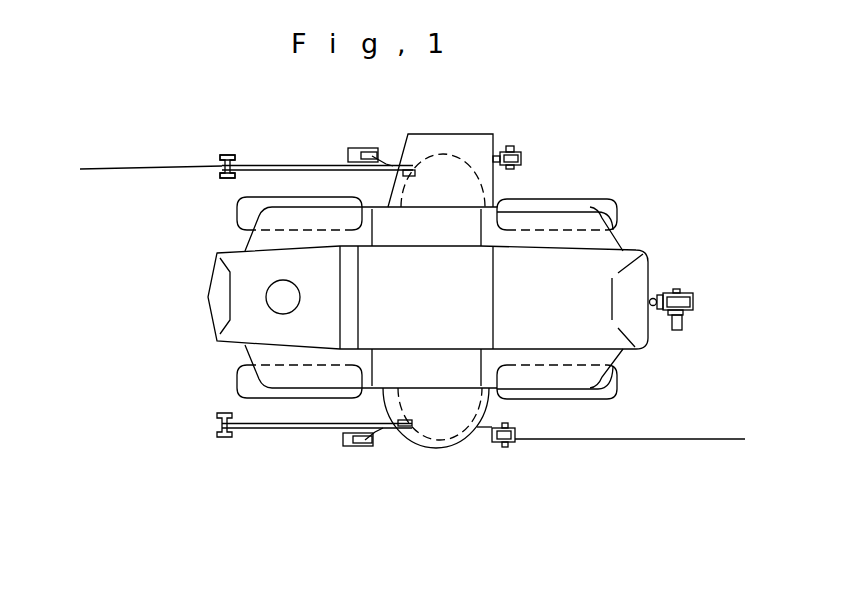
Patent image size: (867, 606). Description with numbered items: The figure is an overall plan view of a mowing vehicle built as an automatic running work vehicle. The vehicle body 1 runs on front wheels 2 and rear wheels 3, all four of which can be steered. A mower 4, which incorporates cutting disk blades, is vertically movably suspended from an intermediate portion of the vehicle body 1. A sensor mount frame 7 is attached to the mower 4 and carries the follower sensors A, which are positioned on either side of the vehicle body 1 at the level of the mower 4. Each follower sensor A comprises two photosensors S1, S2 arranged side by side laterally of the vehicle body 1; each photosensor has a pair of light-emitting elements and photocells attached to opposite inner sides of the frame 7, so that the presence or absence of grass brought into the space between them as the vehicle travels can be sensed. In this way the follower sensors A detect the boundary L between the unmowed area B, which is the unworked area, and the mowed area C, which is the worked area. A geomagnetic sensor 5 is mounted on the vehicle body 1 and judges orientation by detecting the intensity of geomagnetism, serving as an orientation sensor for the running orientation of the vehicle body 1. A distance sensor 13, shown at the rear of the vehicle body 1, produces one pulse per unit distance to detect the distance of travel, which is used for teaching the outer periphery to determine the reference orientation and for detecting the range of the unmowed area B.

The vehicle body 1 is at (643, 250).
The front wheels 2 is at (337, 197).
The rear wheels 3 is at (610, 200).
The mower 4 is at (483, 140).
The geomagnetic sensor 5 is at (292, 300).
The sensor mount frame 7 is at (279, 164).
The distance sensor 13 is at (680, 330).
The follower sensor A is at (131, 203).
The unmowed area B is at (150, 290).
The mowed area C is at (167, 145).
The boundary L is at (190, 167).
The photosensor S1 is at (220, 157).
The photosensor S2 is at (220, 176).